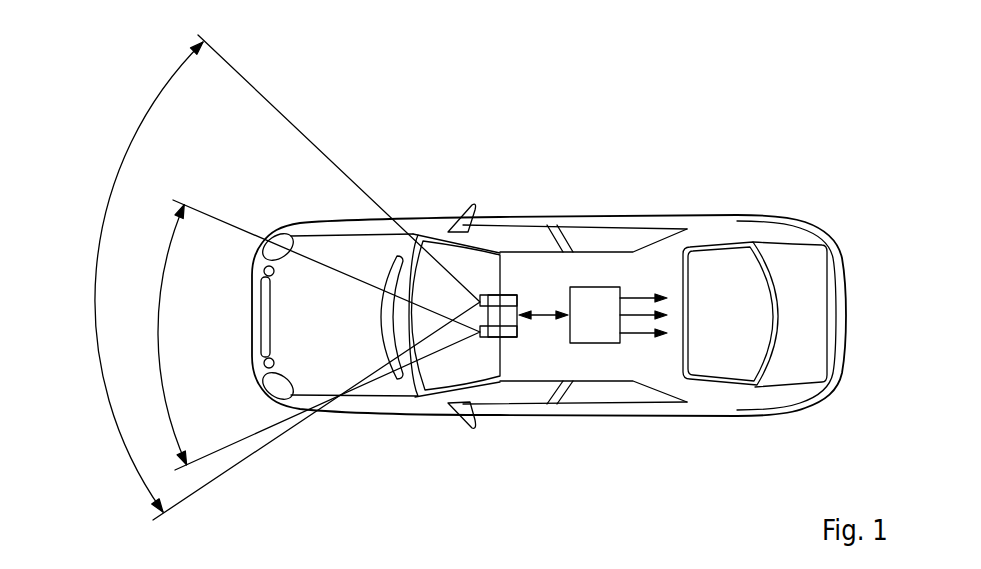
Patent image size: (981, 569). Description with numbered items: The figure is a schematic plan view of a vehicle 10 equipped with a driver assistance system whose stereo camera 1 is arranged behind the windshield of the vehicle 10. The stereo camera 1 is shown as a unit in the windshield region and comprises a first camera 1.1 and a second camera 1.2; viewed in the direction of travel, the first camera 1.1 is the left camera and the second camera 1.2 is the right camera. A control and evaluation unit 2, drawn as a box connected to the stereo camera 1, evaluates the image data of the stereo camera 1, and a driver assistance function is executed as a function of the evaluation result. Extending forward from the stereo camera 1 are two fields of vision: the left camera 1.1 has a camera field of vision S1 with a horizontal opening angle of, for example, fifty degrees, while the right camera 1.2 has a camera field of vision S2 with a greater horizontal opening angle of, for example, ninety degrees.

The vehicle 10 is at (738, 193).
The stereo camera 1 is at (518, 310).
The first camera 1.1 is at (504, 334).
The second camera 1.2 is at (497, 299).
The control and evaluation unit 2 is at (604, 327).
The camera field of vision S1 is at (221, 218).
The camera field of vision S2 is at (340, 166).